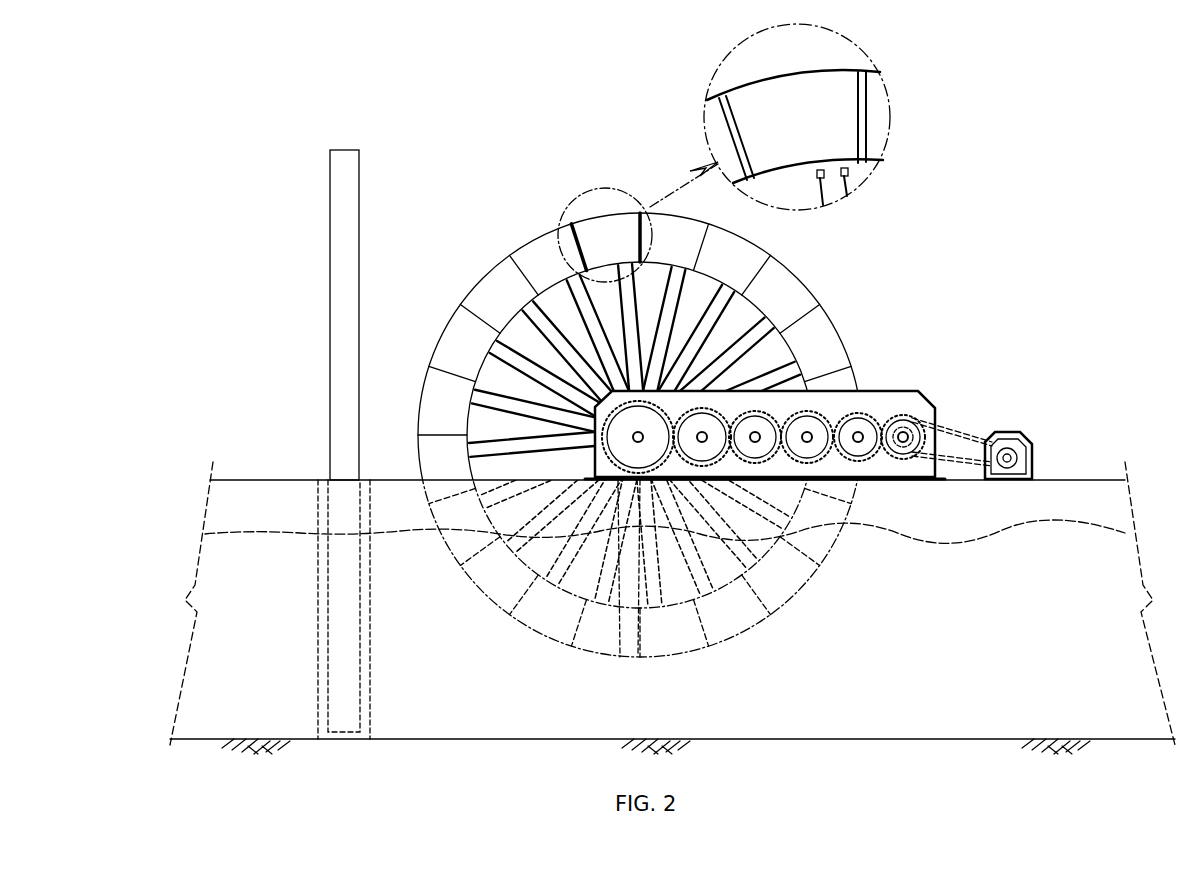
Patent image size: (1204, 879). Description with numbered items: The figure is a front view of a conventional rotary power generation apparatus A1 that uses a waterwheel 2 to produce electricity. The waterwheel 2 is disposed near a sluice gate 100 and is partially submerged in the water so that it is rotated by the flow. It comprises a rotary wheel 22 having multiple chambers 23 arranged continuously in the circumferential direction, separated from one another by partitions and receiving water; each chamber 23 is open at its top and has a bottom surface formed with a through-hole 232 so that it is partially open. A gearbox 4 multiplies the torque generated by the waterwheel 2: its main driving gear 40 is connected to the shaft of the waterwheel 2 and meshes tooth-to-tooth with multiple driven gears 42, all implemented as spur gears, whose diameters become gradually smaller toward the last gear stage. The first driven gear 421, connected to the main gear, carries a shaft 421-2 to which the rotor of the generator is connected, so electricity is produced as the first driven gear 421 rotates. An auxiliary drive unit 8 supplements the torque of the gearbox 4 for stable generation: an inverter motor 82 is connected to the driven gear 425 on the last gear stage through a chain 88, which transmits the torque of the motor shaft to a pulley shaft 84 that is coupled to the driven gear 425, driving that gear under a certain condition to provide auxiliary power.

The waterwheel 2 is at (671, 390).
The rotary wheel 22 is at (452, 338).
The chamber 23 is at (766, 98).
The through-hole 232 is at (810, 200).
The gearbox 4 is at (924, 392).
The main driving gear 40 is at (621, 658).
The driven gears 42 is at (676, 549).
The first driven gear 421 is at (706, 515).
The shaft of the first driven gear 421-2 is at (522, 560).
The driven gear on the last gear stage 425 is at (906, 480).
The auxiliary drive unit 8 is at (1044, 428).
The inverter motor 82 is at (1040, 462).
The pulley shaft 84 is at (904, 434).
The chain 88 is at (982, 442).
The sluice gate 100 is at (336, 220).
The rotary power generation apparatus A1 is at (932, 240).